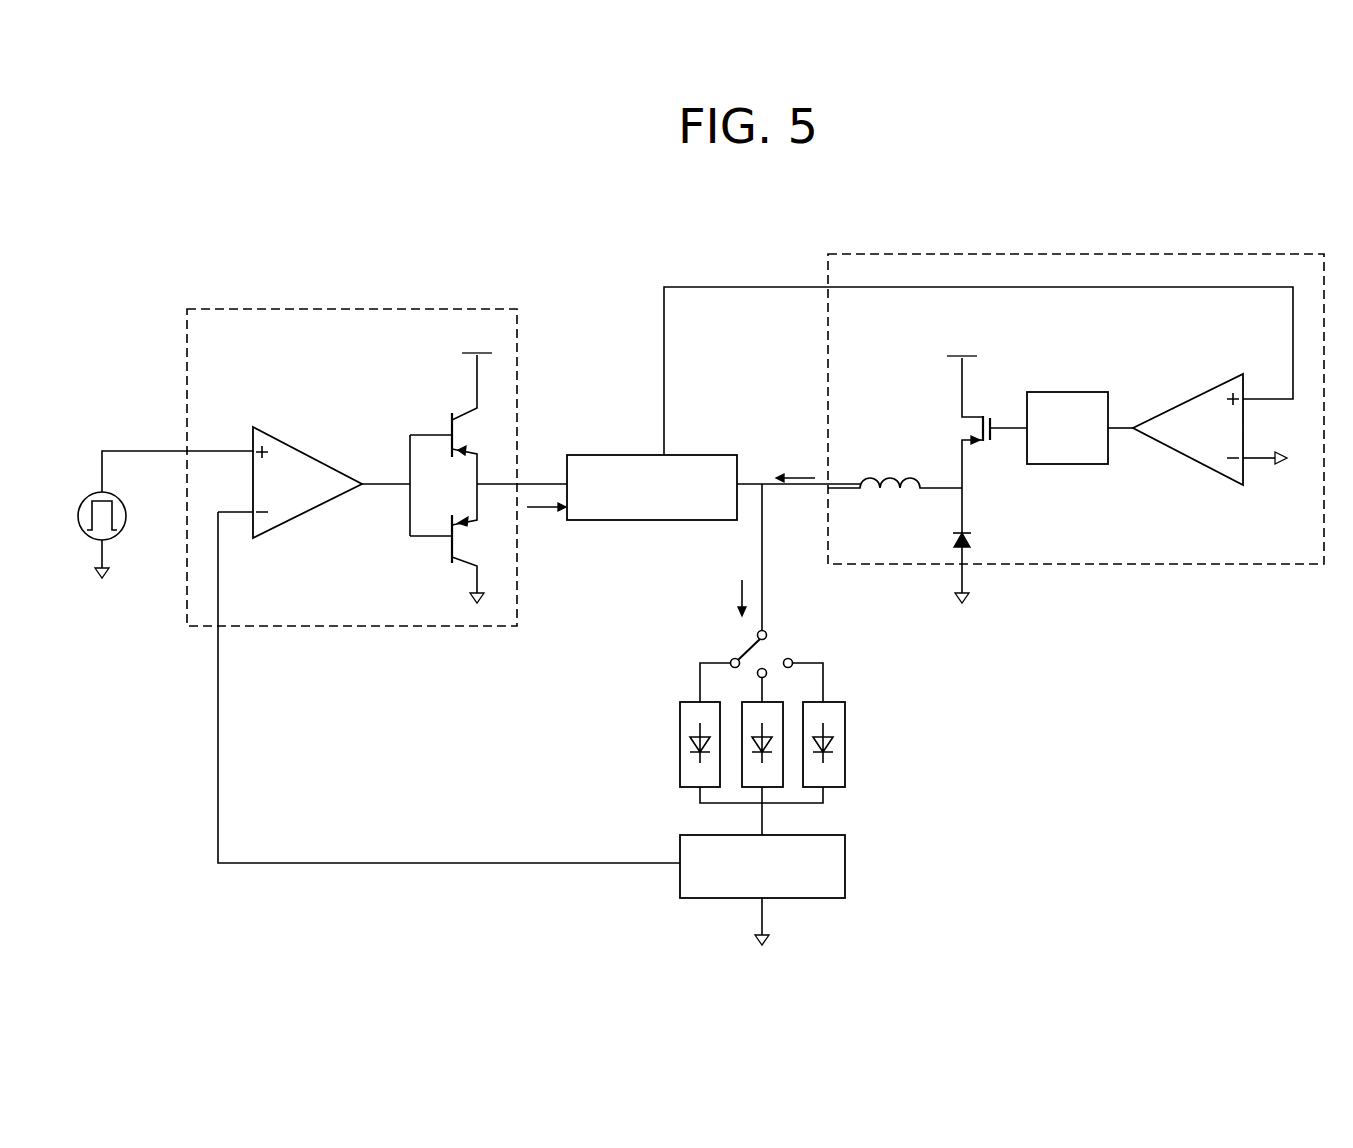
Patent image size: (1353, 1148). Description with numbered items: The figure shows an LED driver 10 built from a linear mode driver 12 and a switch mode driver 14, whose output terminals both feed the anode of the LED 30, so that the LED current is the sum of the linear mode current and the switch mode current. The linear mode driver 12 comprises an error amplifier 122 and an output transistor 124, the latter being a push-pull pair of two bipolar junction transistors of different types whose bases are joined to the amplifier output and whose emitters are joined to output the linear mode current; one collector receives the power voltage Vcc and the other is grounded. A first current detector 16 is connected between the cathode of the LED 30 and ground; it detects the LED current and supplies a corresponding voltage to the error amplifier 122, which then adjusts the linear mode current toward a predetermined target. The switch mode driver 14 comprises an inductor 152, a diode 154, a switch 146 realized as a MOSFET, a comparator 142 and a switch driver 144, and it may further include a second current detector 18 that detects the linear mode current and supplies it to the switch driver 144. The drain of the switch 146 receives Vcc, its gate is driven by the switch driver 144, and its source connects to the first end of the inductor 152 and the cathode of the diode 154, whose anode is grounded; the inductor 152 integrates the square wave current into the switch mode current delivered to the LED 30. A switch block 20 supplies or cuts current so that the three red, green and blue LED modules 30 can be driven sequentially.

The LED driver 10 is at (641, 227).
The linear mode driver 12 is at (349, 308).
The switch mode driver 14 is at (1071, 254).
The first current detector 16 is at (845, 866).
The second current detector 18 is at (577, 455).
The switch block 20 is at (737, 656).
The LED 30 is at (680, 745).
The error amplifier 122 is at (300, 447).
The output transistor 124 is at (452, 520).
The comparator 142 is at (1196, 392).
The switch driver 144 is at (1055, 392).
The switch 146 is at (963, 417).
The inductor 152 is at (925, 483).
The diode 154 is at (975, 539).